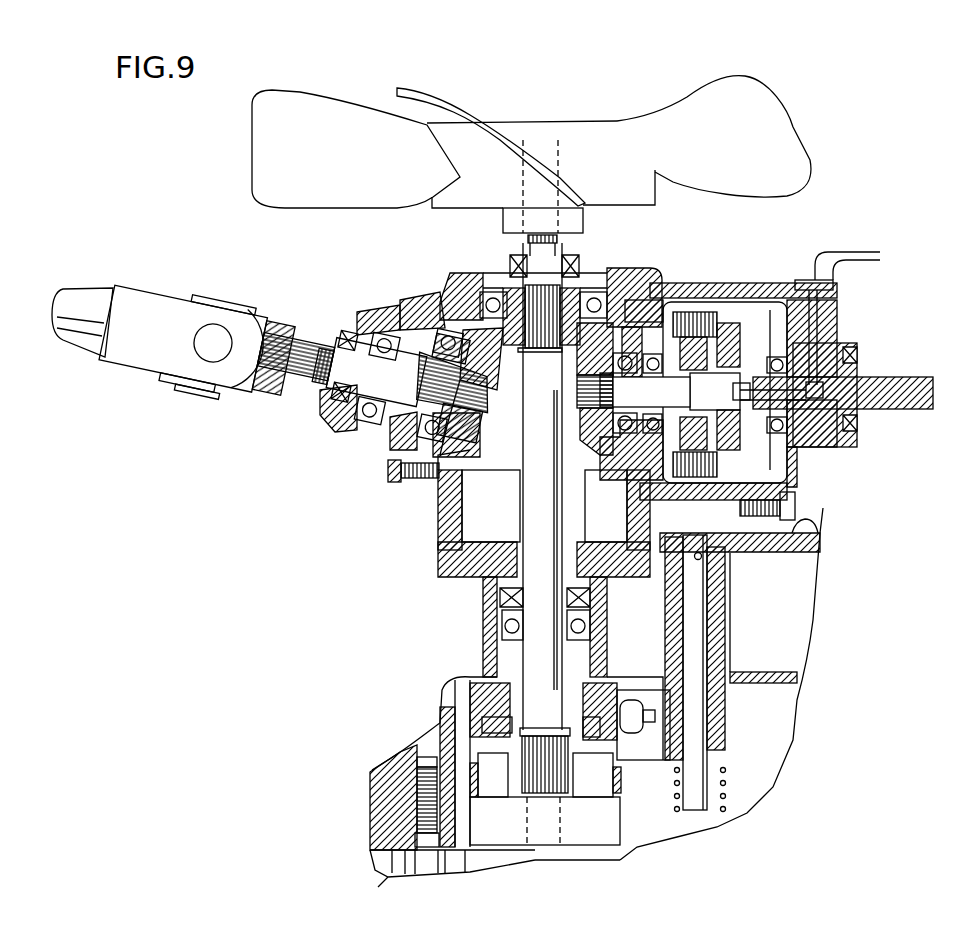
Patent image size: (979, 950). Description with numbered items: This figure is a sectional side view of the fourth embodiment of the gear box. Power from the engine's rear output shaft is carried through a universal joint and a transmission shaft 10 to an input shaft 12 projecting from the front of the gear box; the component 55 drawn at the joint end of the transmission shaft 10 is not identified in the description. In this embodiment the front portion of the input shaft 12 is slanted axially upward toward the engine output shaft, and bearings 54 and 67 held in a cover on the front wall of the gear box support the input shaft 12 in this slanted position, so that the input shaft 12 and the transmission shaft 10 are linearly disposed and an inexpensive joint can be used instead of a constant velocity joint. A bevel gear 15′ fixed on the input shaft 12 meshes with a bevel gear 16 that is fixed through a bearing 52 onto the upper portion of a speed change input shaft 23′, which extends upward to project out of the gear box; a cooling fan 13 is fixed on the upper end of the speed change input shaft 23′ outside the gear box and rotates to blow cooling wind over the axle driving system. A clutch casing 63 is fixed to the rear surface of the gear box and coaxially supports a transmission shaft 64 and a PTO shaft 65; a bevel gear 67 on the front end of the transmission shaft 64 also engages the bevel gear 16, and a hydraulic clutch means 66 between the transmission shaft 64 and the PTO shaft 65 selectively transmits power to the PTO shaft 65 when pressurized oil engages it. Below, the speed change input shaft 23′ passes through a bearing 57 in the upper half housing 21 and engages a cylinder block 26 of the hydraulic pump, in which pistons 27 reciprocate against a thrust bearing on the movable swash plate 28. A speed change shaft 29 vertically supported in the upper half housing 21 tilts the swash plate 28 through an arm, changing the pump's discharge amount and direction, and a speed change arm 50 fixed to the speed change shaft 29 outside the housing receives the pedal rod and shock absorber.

The cooling fan 13 is at (795, 135).
The transmission shaft 10 is at (96, 285).
The motor housing 55 is at (195, 292).
The input shaft 12 is at (330, 365).
The bearing 67 is at (387, 313).
The bearing 54 is at (417, 320).
The bearing 52 is at (458, 282).
The clutch casing 63 is at (700, 300).
The hydraulic clutch means 66 is at (770, 320).
The transmission shaft 64 is at (645, 393).
The PTO shaft 65 is at (897, 400).
The bevel gear 16 is at (510, 370).
The speed change input shaft 23′ is at (535, 512).
The bevel gear 15′ is at (430, 508).
The bearing 57 is at (480, 637).
The speed change shaft 29 is at (705, 628).
The speed change arm 50 is at (828, 527).
The movable swash plate 28 is at (470, 702).
The upper half housing 21 is at (370, 777).
The pistons 27 is at (497, 783).
The cylinder block 26 is at (618, 805).